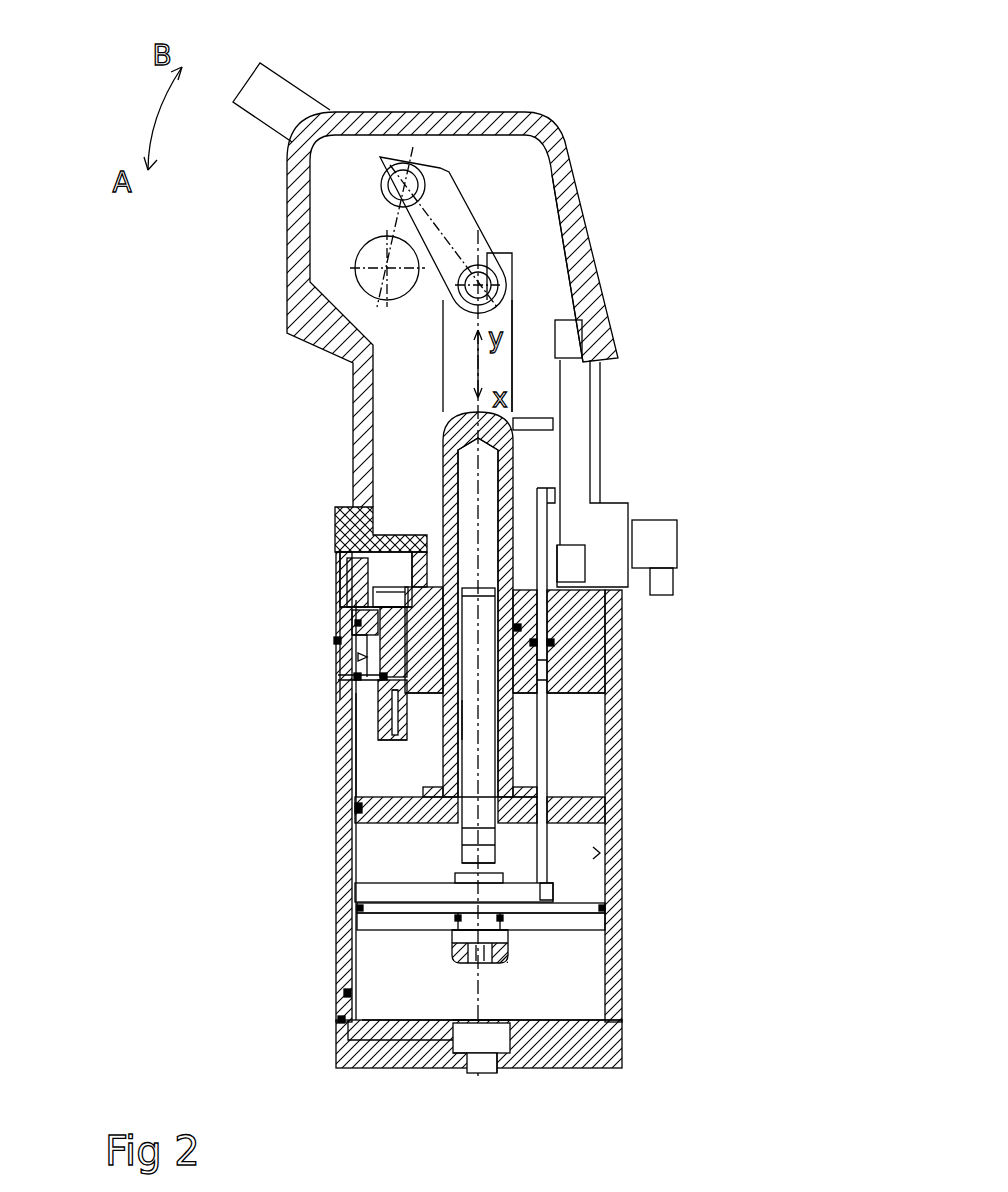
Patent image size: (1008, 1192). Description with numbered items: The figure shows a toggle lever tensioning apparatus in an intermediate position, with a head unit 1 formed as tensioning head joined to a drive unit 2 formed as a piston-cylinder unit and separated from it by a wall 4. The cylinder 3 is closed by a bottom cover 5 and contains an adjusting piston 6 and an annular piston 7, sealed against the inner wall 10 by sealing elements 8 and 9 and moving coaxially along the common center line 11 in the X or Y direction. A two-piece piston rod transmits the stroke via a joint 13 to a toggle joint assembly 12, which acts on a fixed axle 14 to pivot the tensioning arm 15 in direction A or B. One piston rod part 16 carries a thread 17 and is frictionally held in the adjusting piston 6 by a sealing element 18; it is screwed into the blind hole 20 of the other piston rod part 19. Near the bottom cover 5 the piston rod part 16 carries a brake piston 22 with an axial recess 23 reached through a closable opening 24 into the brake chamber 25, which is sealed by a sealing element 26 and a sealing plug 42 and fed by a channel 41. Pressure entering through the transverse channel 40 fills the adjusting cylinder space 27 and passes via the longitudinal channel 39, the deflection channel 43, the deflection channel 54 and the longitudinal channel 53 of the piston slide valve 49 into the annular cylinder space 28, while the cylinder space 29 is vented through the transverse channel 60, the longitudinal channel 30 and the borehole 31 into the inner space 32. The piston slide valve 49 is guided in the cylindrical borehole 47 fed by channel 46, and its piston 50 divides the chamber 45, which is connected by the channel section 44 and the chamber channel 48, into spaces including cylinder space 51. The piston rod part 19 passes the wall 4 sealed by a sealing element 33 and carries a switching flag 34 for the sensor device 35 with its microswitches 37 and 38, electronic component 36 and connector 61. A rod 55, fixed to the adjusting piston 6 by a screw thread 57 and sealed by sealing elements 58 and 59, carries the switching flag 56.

The head unit 1 is at (552, 120).
The drive unit 2 is at (625, 805).
The cylinder 3 is at (613, 1013).
The wall 4 is at (593, 657).
The bottom cover 5 is at (610, 1052).
The adjusting piston 6 is at (500, 935).
The annular piston 7 is at (572, 808).
The sealing element 8 is at (458, 918).
The sealing element 9 is at (357, 808).
The inner wall 10 is at (575, 868).
The center line 11 is at (478, 755).
The toggle joint assembly 12 is at (457, 210).
The joint 13 is at (478, 273).
The axle 14 is at (373, 262).
The tensioning arm 15 is at (273, 93).
The piston rod part 16 is at (470, 843).
The thread 17 is at (462, 828).
The sealing element 18 is at (458, 918).
The piston rod part 19 is at (502, 313).
The blind hole 20 is at (477, 457).
The brake piston 22 is at (508, 943).
The axial recess 23 is at (508, 962).
The closable opening 24 is at (500, 1065).
The brake chamber 25 is at (465, 1050).
The sealing element 26 is at (465, 1040).
The adjusting cylinder space 27 is at (522, 1005).
The annular cylinder space 28 is at (573, 747).
The cylinder space 29 is at (547, 890).
The longitudinal channel 30 is at (480, 720).
The borehole 31 is at (465, 477).
The inner space 32 is at (548, 255).
The sealing element 33 is at (517, 627).
The switching flag 34 is at (542, 424).
The sensor device 35 is at (578, 395).
The electrical or electronic component 36 is at (670, 528).
The microswitch 37 is at (570, 338).
The microswitch 38 is at (573, 560).
The longitudinal channel 39 is at (347, 993).
The transverse channel 40 is at (340, 1020).
The channel 41 is at (373, 1038).
The sealing plug 42 is at (477, 1072).
The deflection channel 43 is at (355, 677).
The channel section 44 is at (403, 560).
The chamber 45 is at (378, 558).
The channel 46 is at (337, 640).
The cylindrical borehole 47 is at (358, 657).
The chamber channel 48 is at (358, 623).
The piston slide valve 49 is at (383, 718).
The piston 50 is at (378, 600).
The cylinder space 51 is at (350, 553).
The longitudinal channel 53 is at (380, 740).
The deflection channel 54 is at (380, 678).
The rod 55 is at (542, 670).
The switching flag 56 is at (550, 497).
The screw thread 57 is at (587, 918).
The sealing element 58 is at (550, 642).
The sealing element 59 is at (598, 848).
The transverse channel 60 is at (460, 862).
The connector 61 is at (662, 583).